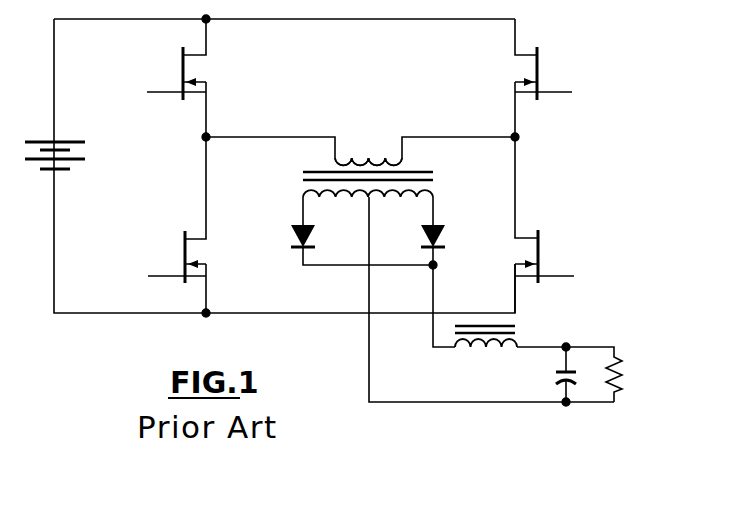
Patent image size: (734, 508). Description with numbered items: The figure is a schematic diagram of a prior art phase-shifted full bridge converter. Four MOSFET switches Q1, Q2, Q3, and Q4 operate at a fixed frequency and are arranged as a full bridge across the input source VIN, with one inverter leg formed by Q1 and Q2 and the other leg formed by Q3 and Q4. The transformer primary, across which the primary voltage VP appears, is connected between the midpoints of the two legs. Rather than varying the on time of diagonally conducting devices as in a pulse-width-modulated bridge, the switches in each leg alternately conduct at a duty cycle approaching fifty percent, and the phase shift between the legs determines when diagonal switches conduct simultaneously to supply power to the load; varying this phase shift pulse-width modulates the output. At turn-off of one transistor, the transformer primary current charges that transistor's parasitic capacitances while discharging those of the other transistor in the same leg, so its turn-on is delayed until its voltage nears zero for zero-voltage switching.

The MOSFET switch Q1 is at (176, 78).
The MOSFET switch Q2 is at (177, 225).
The MOSFET switch Q3 is at (527, 78).
The MOSFET switch Q4 is at (528, 225).
The input voltage source VIN is at (64, 143).
The primary winding voltage VP is at (368, 136).